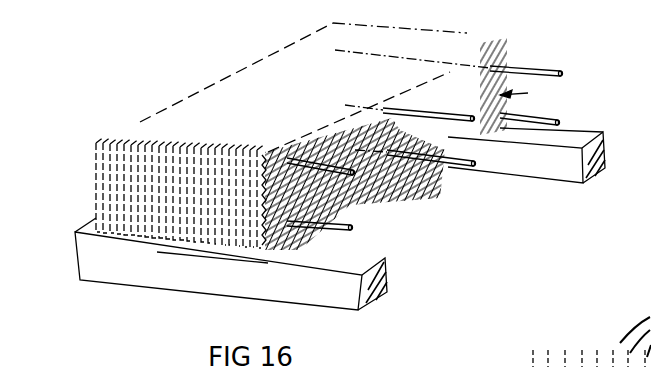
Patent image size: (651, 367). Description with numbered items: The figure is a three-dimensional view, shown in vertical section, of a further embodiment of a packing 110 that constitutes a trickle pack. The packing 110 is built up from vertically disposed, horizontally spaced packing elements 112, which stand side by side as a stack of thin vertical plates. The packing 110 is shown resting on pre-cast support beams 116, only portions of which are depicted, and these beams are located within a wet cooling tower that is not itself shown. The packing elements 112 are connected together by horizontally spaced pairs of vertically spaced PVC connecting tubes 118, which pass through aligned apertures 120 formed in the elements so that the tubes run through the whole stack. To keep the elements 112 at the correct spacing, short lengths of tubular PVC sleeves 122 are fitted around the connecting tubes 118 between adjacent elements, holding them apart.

The packing 110 is at (251, 44).
The packing elements 112 is at (132, 163).
The pre-cast support beams 116 is at (158, 275).
The PVC connecting tubes 118 is at (397, 108).
The apertures 120 is at (531, 94).
The tubular PVC sleeves 122 is at (575, 363).